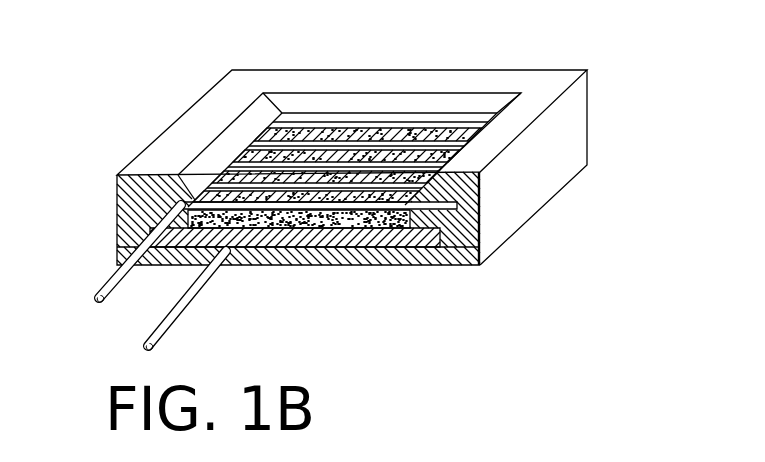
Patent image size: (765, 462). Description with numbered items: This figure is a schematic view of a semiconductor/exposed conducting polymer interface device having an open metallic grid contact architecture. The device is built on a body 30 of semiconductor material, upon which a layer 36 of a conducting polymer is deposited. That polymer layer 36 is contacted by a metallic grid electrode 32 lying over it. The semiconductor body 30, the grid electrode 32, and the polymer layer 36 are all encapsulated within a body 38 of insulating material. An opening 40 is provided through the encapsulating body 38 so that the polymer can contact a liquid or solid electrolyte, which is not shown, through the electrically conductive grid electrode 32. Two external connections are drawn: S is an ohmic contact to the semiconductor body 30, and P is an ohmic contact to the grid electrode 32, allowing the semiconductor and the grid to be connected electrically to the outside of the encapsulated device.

The body of semiconductor material 30 is at (340, 238).
The metallic grid electrode 32 is at (290, 152).
The layer of conducting polymer 36 is at (412, 220).
The body of insulating material 38 is at (562, 140).
The opening 40 is at (368, 121).
The ohmic contact to the electrode P is at (106, 285).
The ohmic contact to the semiconductor material S is at (185, 309).